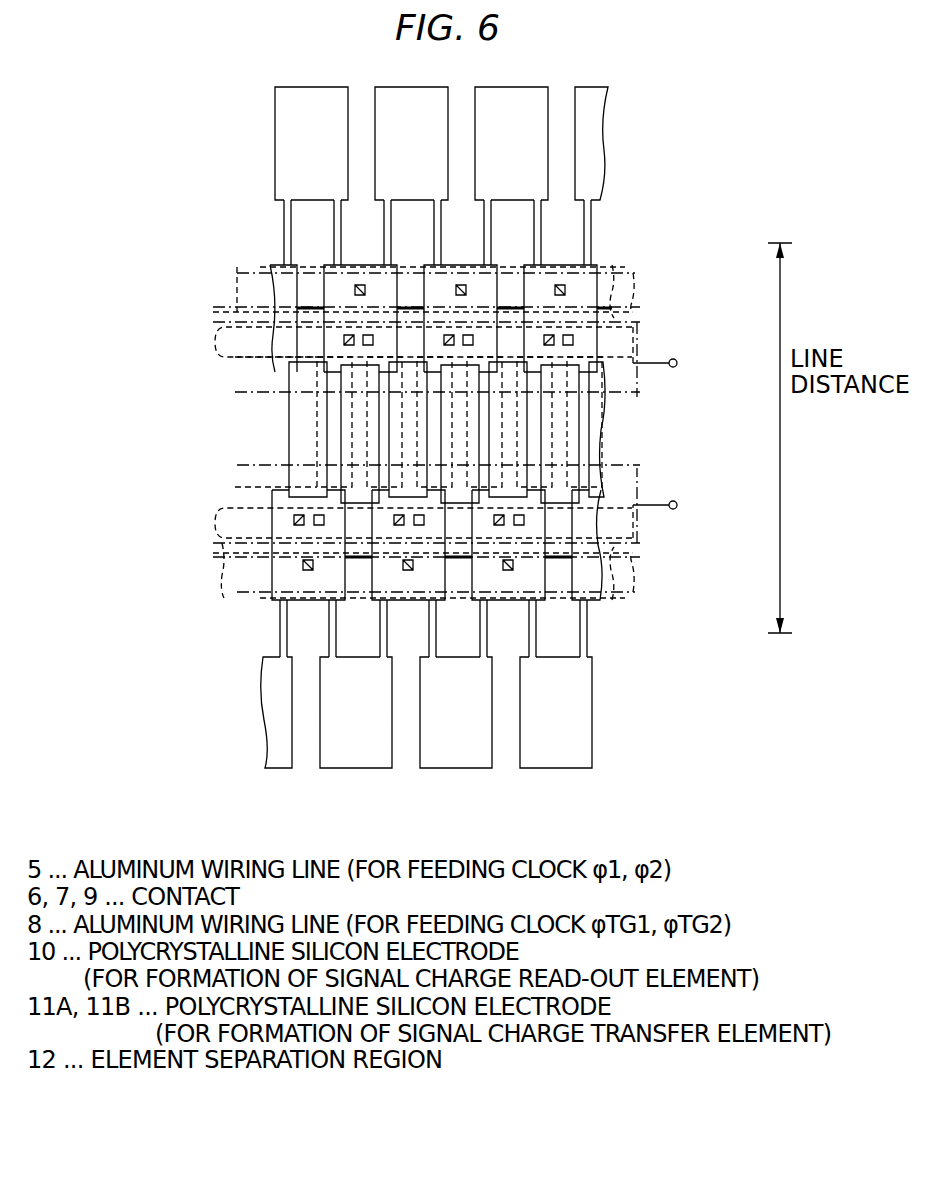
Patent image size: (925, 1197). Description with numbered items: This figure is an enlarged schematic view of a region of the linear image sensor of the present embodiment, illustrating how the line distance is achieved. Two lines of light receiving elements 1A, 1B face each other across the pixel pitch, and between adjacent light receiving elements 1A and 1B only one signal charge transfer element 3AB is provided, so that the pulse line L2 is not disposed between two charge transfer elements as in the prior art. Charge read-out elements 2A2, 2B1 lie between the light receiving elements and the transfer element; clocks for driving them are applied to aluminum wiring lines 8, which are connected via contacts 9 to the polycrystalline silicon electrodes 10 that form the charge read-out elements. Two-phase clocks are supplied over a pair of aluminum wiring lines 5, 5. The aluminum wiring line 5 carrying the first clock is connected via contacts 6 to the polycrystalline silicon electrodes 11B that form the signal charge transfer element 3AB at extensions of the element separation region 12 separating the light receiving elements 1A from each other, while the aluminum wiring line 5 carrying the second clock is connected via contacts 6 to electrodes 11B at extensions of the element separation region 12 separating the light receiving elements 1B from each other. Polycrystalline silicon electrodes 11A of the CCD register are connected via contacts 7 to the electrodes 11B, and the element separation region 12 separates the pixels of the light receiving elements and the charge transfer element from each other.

The light receiving element 1A is at (613, 221).
The light receiving element 1B is at (610, 649).
The charge read-out element 2A2 is at (683, 296).
The charge read-out element 2B1 is at (683, 572).
The charge transfer element 3AB is at (483, 436).
The aluminum wiring line 5 is at (447, 433).
The contact 6 is at (379, 393).
The contact 7 is at (369, 411).
The aluminum wiring line 8 is at (444, 439).
The contact 9 is at (385, 416).
The polycrystalline silicon electrode 10 is at (458, 439).
The polycrystalline silicon electrode 11A is at (451, 432).
The polycrystalline silicon electrode 11B is at (451, 422).
The element separation region 12 is at (465, 427).
The pulse line L2 is at (750, 438).